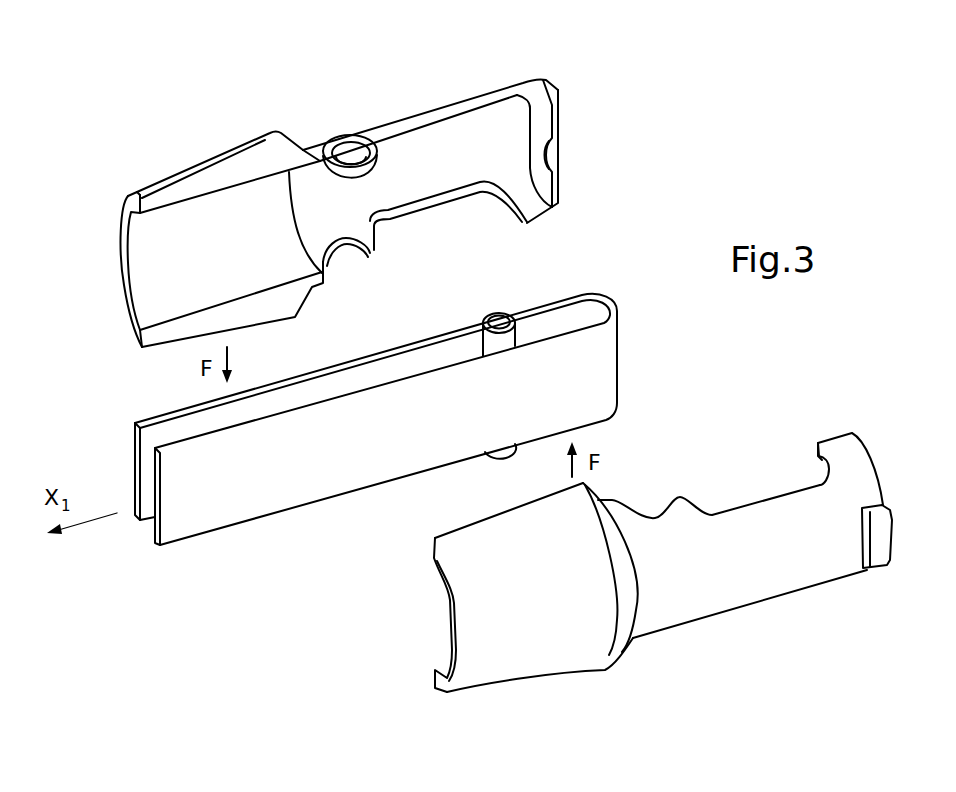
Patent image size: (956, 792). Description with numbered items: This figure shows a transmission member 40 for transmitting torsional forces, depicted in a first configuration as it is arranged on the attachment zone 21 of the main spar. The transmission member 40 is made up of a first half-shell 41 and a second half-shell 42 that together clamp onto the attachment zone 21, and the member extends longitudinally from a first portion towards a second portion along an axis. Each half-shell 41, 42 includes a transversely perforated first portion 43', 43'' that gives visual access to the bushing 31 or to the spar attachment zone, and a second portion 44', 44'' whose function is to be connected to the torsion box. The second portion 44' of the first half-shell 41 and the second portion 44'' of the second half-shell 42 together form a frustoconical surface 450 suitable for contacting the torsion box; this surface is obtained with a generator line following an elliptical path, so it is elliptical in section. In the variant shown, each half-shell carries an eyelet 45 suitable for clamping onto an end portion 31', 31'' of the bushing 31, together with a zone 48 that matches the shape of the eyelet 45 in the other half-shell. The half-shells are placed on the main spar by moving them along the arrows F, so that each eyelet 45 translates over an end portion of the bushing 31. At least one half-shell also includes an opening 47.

The attachment zone 21 is at (594, 280).
The bushing 31 is at (455, 379).
The end portion of the bushing 31' is at (440, 329).
The end portion of the bushing 31'' is at (460, 476).
The transmission member 40 is at (278, 636).
The first half-shell 41 is at (400, 86).
The second half-shell 42 is at (749, 634).
The first portion 43' is at (565, 127).
The first portion 43'' is at (838, 476).
The second portion 44' is at (228, 153).
The second portion 44'' is at (536, 615).
The eyelet 45 is at (386, 165).
The opening 47 is at (487, 97).
The zone 48 is at (352, 275).
The frustoconical surface 450 is at (150, 172).